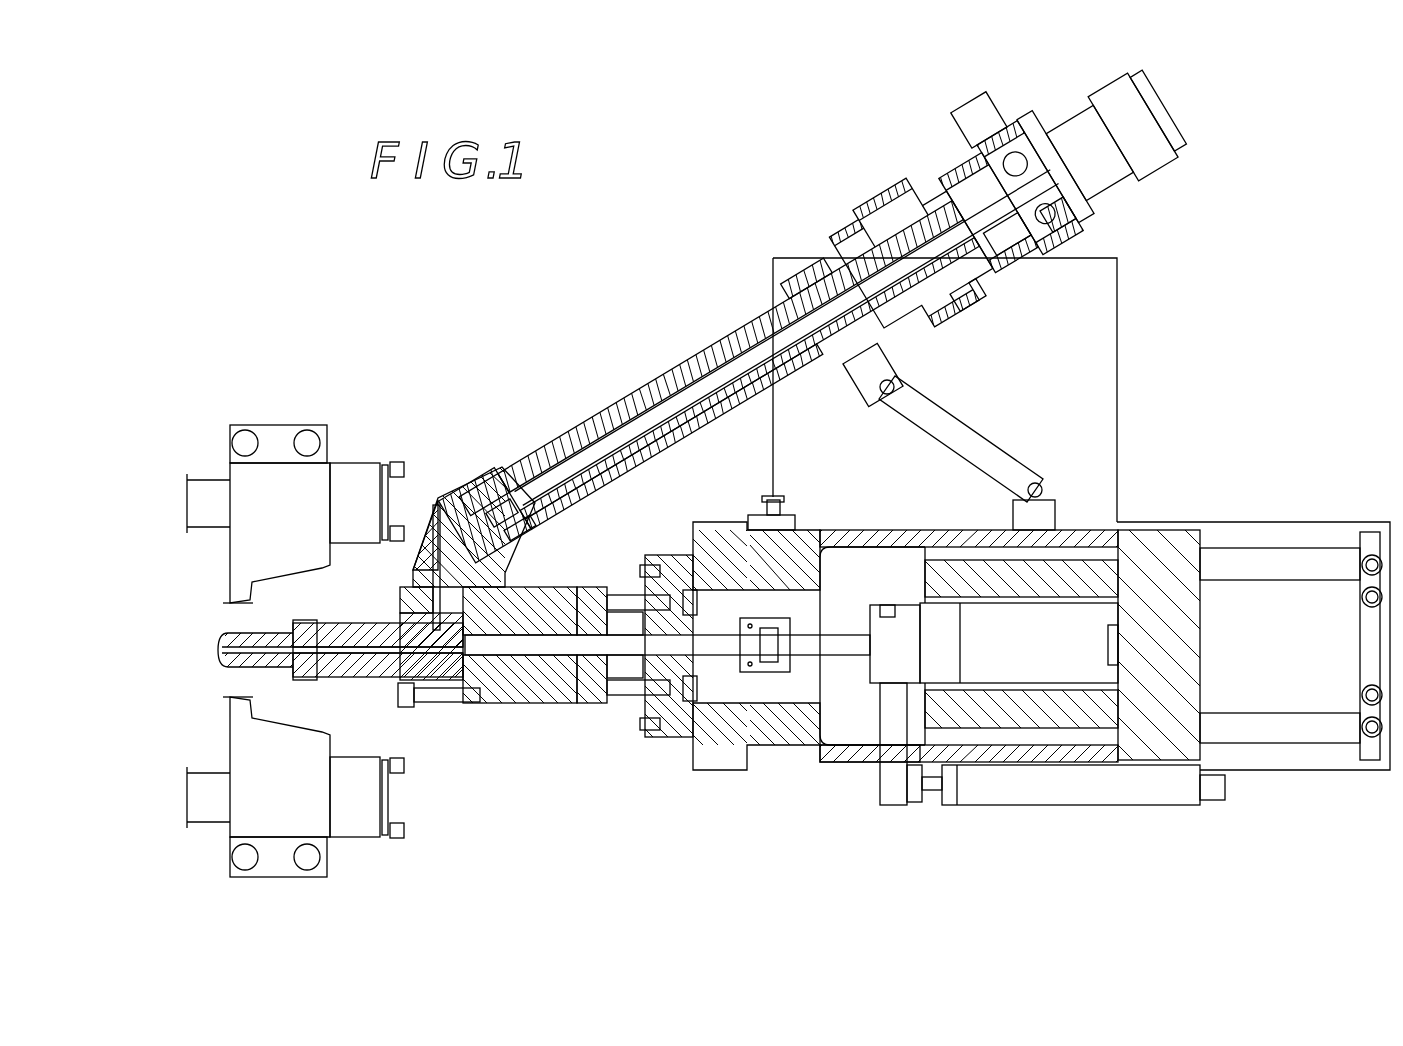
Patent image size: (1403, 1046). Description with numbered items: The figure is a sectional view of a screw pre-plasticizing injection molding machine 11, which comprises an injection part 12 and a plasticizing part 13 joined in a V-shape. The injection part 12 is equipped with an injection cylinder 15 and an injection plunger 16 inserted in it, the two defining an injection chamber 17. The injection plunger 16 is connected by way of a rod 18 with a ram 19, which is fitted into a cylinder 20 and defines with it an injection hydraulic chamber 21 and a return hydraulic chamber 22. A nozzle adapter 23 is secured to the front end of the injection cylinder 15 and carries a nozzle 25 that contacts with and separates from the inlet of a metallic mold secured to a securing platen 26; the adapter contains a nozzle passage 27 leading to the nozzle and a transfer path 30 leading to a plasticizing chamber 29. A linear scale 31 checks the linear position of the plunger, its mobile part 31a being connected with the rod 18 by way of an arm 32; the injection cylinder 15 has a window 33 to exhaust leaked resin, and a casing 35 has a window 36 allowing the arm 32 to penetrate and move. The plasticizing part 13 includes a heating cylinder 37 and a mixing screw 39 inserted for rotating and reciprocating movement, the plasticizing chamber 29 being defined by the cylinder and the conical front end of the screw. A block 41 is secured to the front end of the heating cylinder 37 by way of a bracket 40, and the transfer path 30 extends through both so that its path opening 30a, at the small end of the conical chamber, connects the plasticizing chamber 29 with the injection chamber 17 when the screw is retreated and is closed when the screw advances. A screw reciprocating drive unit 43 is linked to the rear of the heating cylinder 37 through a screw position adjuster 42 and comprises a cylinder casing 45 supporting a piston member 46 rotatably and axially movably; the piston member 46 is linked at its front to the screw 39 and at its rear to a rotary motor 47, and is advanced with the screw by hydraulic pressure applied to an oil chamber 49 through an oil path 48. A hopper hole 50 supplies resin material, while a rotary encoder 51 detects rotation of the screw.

The screw pre-plasticizing injection molding machine 11 is at (580, 300).
The injection part 12 is at (632, 757).
The plasticizing part 13 is at (497, 390).
The injection cylinder 15 is at (540, 697).
The injection plunger 16 is at (640, 655).
The injection chamber 17 is at (505, 650).
The rod 18 is at (838, 700).
The ram 19 is at (1035, 700).
The cylinder 20 is at (1090, 715).
The injection hydraulic chamber 21 is at (1118, 655).
The return hydraulic chamber 22 is at (1003, 705).
The nozzle adapter 23 is at (332, 665).
The nozzle 25 is at (216, 648).
The securing platen 26 is at (238, 475).
The nozzle bore 27 is at (360, 660).
The plasticizing chamber 29 is at (480, 490).
The transfer path 30 is at (412, 572).
The path opening 30a is at (512, 518).
The linear scale 31 is at (977, 800).
The mobile part 31a is at (930, 787).
The arm 32 is at (895, 797).
The window 33 is at (580, 700).
The casing 35 is at (802, 750).
The window 36 is at (860, 752).
The heating cylinder 37 is at (645, 388).
The mixing screw 39 is at (575, 460).
The bracket 40 is at (470, 450).
The block 41 is at (438, 500).
The screw position adjuster 42 is at (868, 178).
The screw reciprocating drive unit 43 is at (930, 186).
The cylinder casing 45 is at (975, 255).
The piston member 46 is at (965, 300).
The rotary motor 47 is at (1085, 120).
The oil path 48 is at (1010, 262).
The oil chamber 49 is at (1005, 170).
The hopper hole 50 is at (798, 275).
The rotary encoder 51 is at (968, 112).